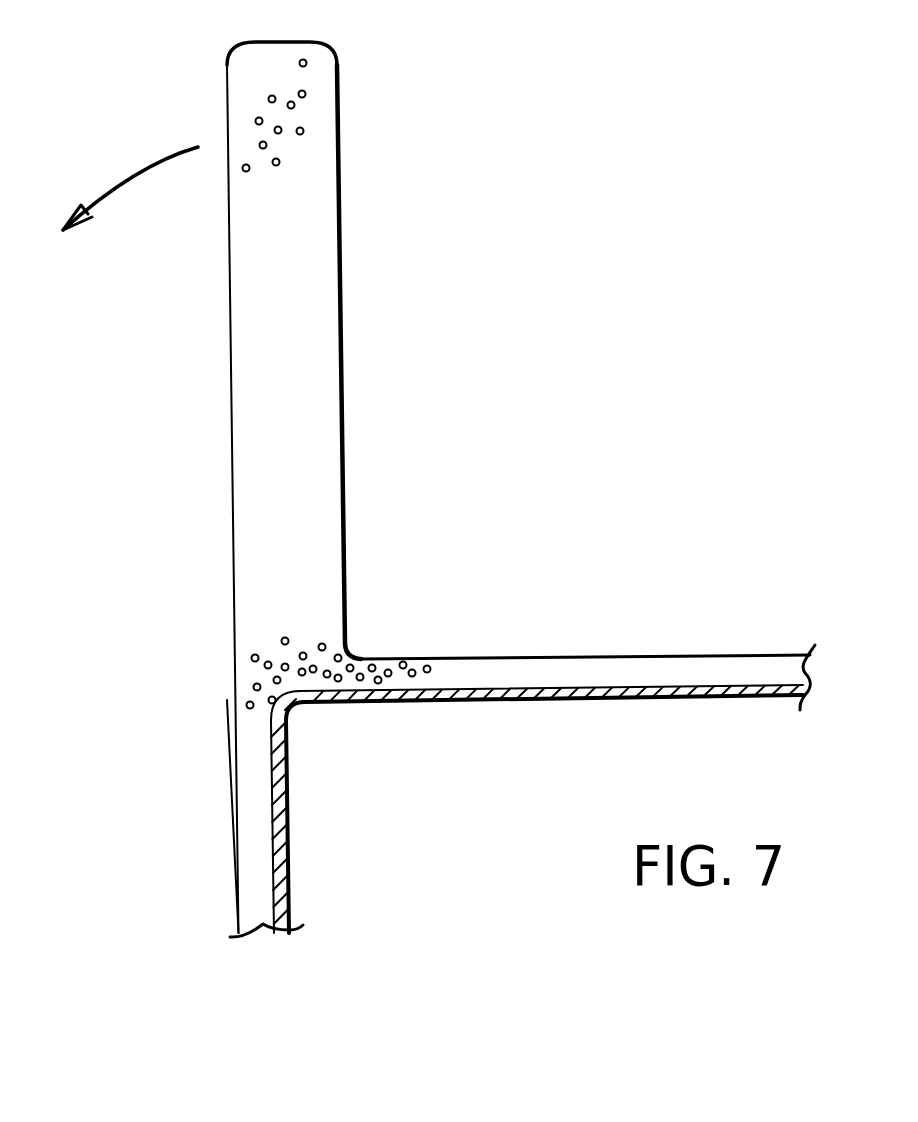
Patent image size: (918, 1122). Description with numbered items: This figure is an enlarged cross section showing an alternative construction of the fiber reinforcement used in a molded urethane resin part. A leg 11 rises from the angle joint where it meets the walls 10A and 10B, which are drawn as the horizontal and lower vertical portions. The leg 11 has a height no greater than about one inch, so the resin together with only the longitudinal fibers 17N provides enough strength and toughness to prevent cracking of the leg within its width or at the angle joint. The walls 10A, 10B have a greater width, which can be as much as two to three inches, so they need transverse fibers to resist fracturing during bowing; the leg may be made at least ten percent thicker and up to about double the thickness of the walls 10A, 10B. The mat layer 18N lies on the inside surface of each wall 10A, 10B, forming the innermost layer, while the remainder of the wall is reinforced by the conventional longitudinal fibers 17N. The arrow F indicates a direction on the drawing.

The leg 11 is at (327, 262).
The wall 10A is at (630, 670).
The wall 10B is at (253, 848).
The longitudinal fibers 17N is at (360, 674).
The mat layer 18N is at (515, 702).
The flow direction arrow F is at (130, 179).